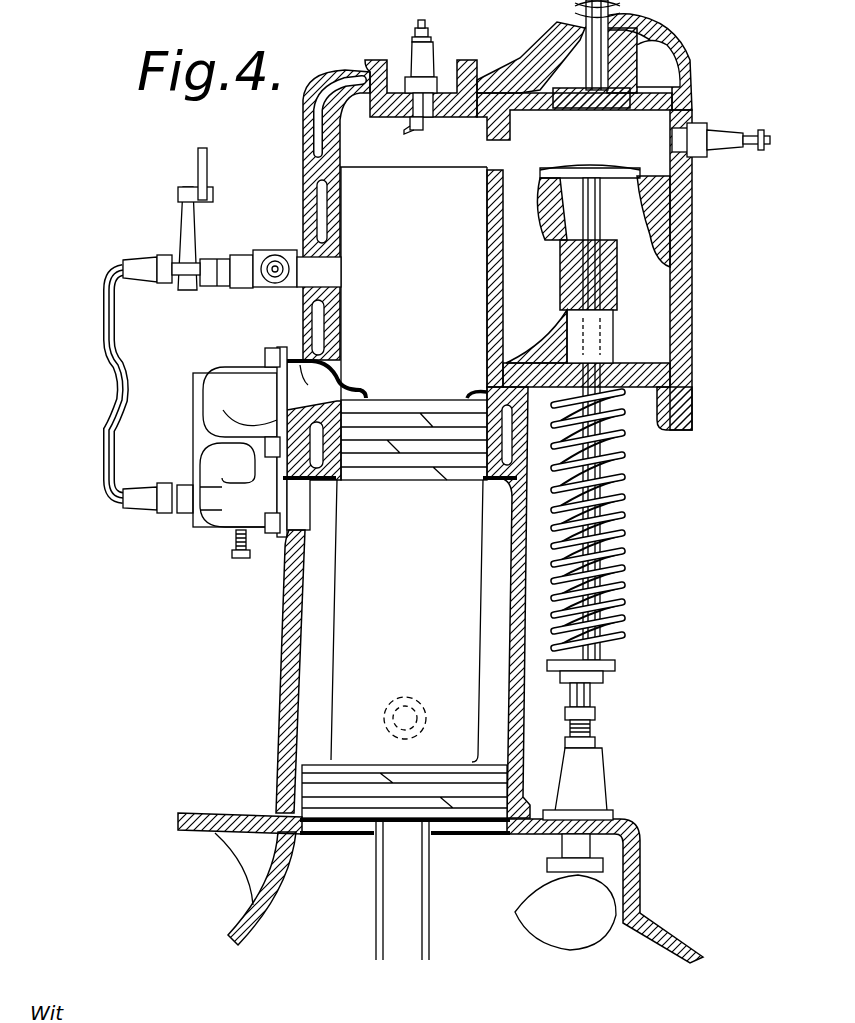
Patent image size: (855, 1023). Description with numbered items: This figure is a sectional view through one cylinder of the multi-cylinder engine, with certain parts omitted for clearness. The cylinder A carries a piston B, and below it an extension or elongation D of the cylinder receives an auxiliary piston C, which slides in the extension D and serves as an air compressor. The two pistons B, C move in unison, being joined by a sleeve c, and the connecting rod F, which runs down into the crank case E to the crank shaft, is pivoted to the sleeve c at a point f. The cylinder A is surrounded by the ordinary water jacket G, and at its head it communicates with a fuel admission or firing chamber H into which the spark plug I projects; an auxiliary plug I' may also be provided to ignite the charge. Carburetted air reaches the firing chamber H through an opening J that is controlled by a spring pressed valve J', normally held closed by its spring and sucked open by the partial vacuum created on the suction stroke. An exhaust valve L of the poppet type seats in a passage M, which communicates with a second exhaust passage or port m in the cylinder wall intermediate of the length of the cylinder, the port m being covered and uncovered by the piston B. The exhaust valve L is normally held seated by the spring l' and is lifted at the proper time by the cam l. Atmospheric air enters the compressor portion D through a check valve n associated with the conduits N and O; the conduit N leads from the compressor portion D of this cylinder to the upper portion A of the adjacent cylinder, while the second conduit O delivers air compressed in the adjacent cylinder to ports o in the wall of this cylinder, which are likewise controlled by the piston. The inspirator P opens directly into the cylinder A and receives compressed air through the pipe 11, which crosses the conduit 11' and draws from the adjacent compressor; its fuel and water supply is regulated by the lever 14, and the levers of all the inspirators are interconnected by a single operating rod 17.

The cylinder A is at (413, 283).
The piston B is at (405, 460).
The sleeve c is at (407, 621).
The auxiliary piston C is at (360, 795).
The extension or elongation of the cylinder D is at (288, 645).
The crank case E is at (662, 932).
The connecting rod F is at (375, 908).
The pivot point f is at (402, 705).
The water jacket G is at (303, 188).
The fuel admission or firing chamber H is at (652, 117).
The spark plug I is at (728, 125).
The auxiliary plug I' is at (421, 77).
The opening J is at (614, 54).
The spring pressed valve J' is at (557, 16).
The exhaust valve L is at (567, 174).
The cam l is at (596, 810).
The spring l' is at (610, 531).
The exhaust passage M is at (640, 213).
The exhaust port m is at (468, 394).
The conduit N is at (230, 505).
The check valve n is at (240, 560).
The second conduit O is at (228, 375).
The compressed air inlet port o is at (292, 355).
The inspirator P is at (258, 250).
The pipe or conduit 11 is at (141, 363).
The conduit 11' is at (114, 482).
The lever 14 is at (183, 228).
The operating rod 17 is at (198, 163).